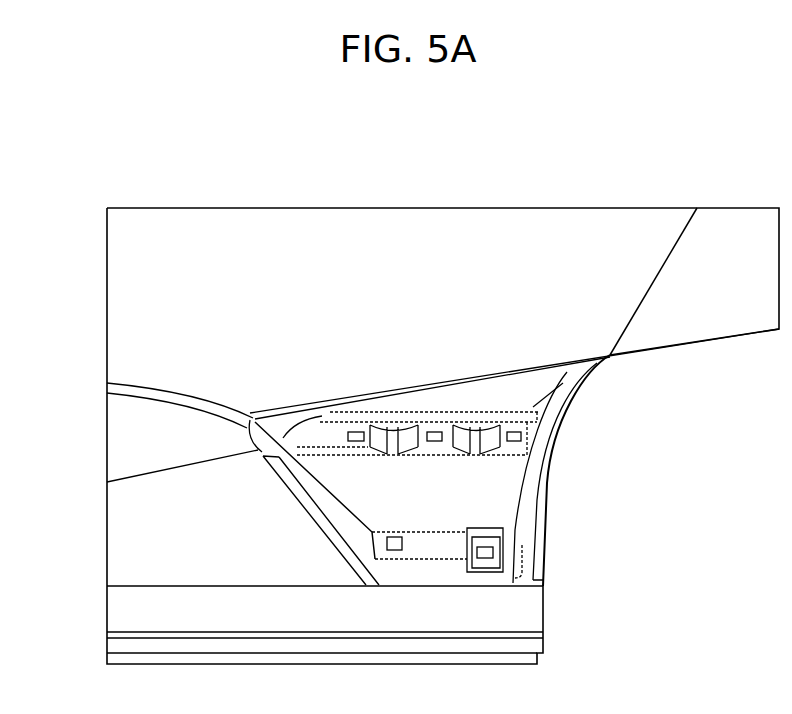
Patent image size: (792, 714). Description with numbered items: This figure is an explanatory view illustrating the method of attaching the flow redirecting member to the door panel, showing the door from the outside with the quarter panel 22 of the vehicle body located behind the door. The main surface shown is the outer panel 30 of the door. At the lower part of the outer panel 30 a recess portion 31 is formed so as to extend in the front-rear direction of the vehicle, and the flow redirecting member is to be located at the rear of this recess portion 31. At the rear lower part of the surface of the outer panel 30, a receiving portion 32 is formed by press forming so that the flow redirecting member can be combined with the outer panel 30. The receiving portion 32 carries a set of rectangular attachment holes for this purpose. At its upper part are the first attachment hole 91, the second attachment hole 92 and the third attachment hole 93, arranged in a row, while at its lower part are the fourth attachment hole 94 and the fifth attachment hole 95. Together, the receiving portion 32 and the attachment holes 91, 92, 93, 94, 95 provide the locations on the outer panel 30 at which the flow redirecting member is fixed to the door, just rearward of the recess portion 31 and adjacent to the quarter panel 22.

The outer panel 30 is at (198, 243).
The quarter panel 22 is at (736, 265).
The recess portion 31 is at (186, 527).
The receiving portion 32 is at (358, 478).
The first attachment hole 91 is at (515, 431).
The second attachment hole 92 is at (434, 431).
The third attachment hole 93 is at (356, 431).
The fourth attachment hole 94 is at (487, 560).
The fifth attachment hole 95 is at (395, 551).